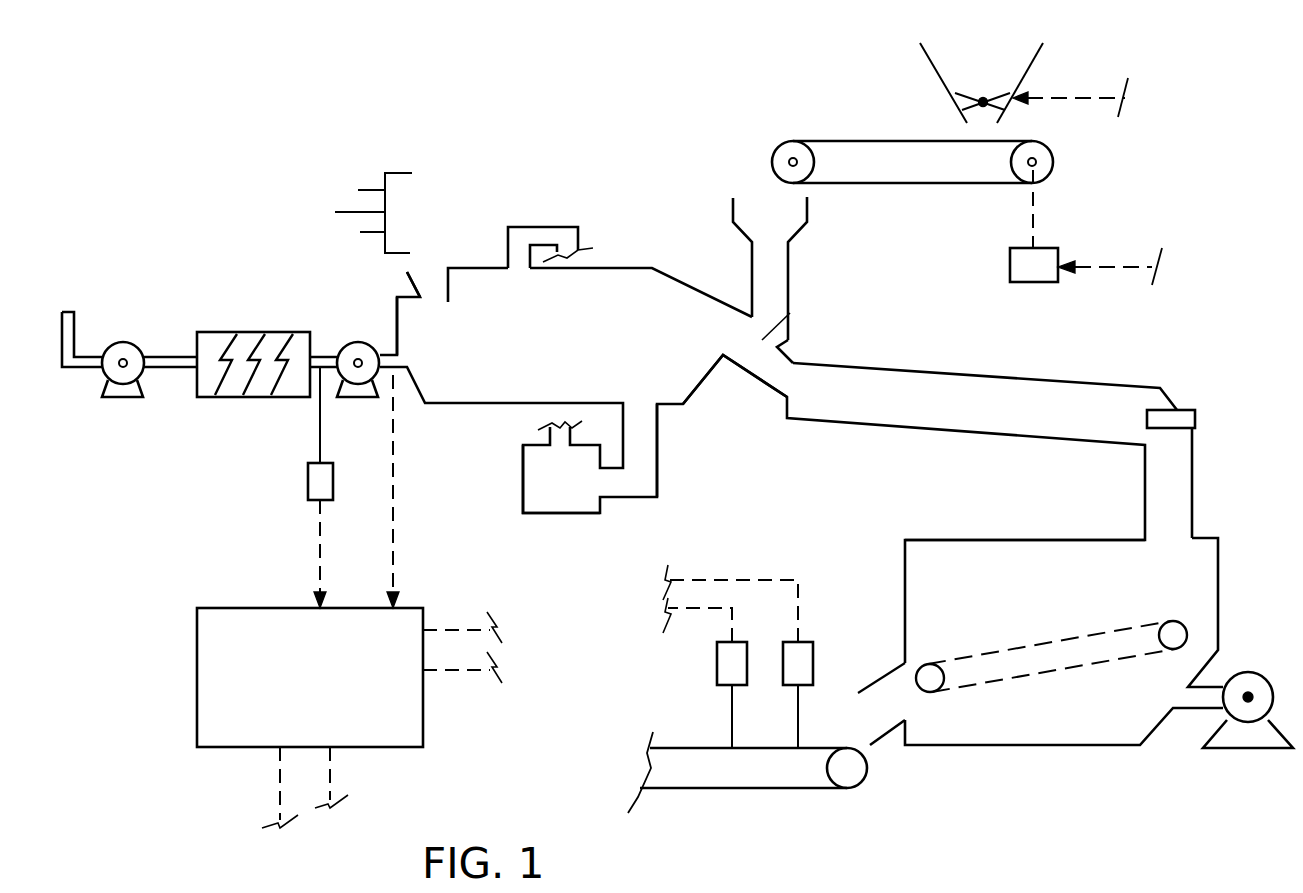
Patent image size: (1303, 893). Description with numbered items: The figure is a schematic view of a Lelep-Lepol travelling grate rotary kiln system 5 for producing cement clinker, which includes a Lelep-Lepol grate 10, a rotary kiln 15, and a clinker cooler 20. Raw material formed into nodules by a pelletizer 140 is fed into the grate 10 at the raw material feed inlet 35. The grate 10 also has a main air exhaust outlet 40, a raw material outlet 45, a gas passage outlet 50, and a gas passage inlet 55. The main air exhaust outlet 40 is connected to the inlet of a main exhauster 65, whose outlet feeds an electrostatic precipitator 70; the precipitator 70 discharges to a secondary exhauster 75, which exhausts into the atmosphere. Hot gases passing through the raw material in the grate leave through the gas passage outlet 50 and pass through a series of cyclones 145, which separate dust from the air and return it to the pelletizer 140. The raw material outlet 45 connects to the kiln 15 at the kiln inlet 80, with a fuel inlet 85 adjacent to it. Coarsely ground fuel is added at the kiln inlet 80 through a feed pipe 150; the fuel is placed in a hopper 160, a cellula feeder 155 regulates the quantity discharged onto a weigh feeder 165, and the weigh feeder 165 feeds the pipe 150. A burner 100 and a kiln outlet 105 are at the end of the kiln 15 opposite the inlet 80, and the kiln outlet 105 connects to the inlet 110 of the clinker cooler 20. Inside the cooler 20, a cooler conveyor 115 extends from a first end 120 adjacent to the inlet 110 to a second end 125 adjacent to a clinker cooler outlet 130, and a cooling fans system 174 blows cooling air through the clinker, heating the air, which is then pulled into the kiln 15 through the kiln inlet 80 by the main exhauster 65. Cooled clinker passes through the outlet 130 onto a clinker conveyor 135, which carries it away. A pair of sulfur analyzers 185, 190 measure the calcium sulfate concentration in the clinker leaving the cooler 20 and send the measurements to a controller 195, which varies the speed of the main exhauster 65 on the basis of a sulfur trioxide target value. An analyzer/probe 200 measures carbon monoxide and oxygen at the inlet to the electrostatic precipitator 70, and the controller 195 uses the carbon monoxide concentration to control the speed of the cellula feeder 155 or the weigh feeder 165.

The Lelep-Lepol travelling grate rotary kiln system 5 is at (661, 96).
The Lelep-Lepol grate 10 is at (652, 270).
The rotary kiln 15 is at (1020, 377).
The clinker cooler 20 is at (1023, 540).
The raw material feed inlet 35 is at (427, 268).
The main air exhaust outlet 40 is at (393, 350).
The raw material outlet 45 is at (743, 377).
The gas passage outlet 50 is at (662, 443).
The gas passage inlet 55 is at (518, 227).
The main exhauster 65 is at (345, 345).
The electrostatic precipitator 70 is at (200, 332).
The secondary exhauster 75 is at (105, 373).
The kiln inlet 80 is at (780, 373).
The fuel inlet 85 is at (790, 313).
The burner 100 is at (1182, 410).
The kiln outlet 105 is at (1168, 445).
The inlet of the clinker cooler 110 is at (1173, 552).
The cooler conveyor 115 is at (1057, 673).
The first end of the cooler conveyor 120 is at (1177, 620).
The second end of the cooler conveyor 125 is at (932, 690).
The clinker cooler outlet 130 is at (893, 680).
The clinker conveyor 135 is at (788, 793).
The pelletizer 140 is at (383, 180).
The cyclones 145 is at (537, 517).
The feed pipe 150 is at (790, 262).
The cellula feeder 155 is at (983, 100).
The hopper 160 is at (1037, 65).
The weigh feeder 165 is at (868, 138).
The cooling fans system 174 is at (1227, 750).
The sulfur analyzer 185 is at (727, 673).
The sulfur analyzer 190 is at (792, 647).
The controller 195 is at (197, 713).
The analyzer/probe 200 is at (308, 480).